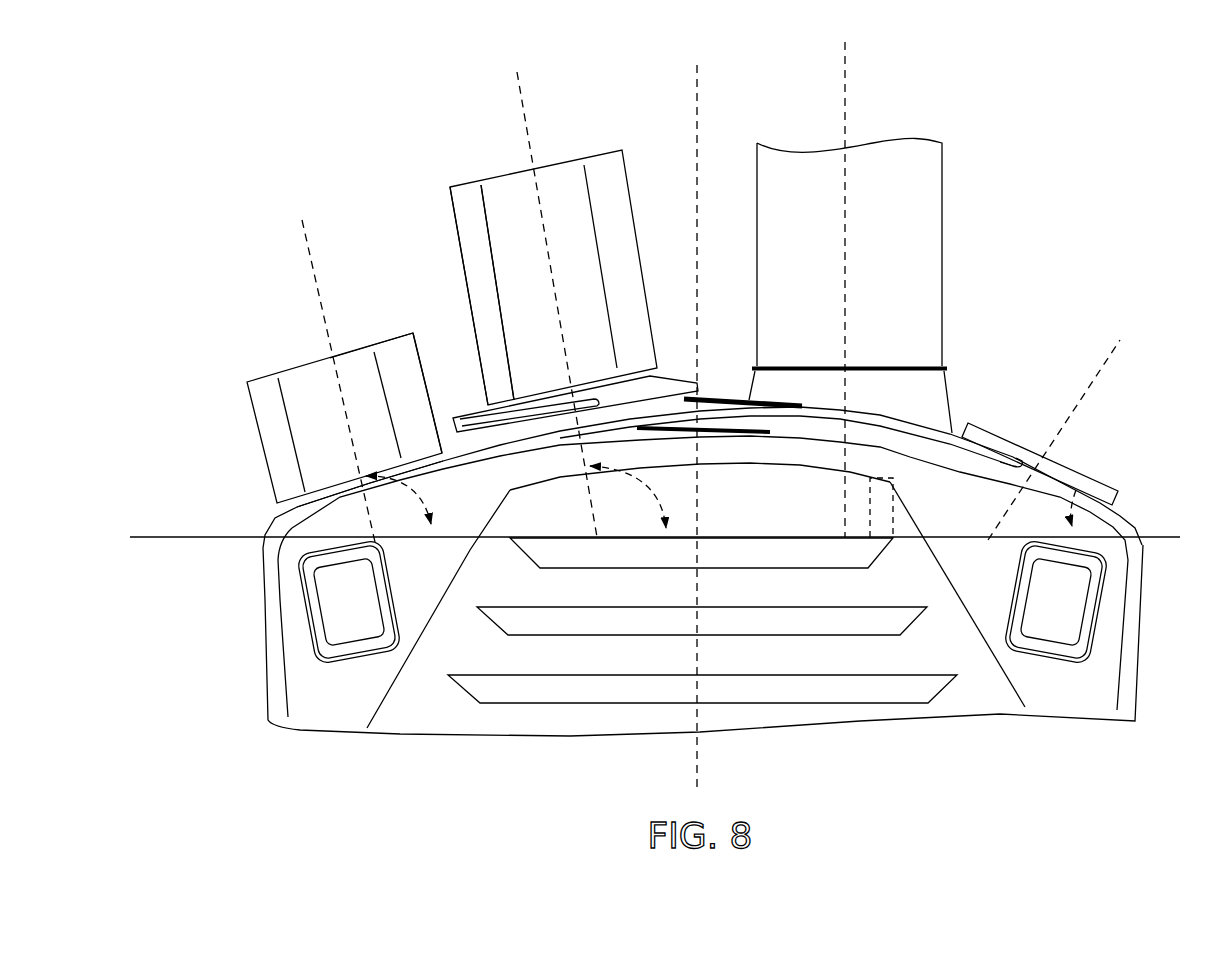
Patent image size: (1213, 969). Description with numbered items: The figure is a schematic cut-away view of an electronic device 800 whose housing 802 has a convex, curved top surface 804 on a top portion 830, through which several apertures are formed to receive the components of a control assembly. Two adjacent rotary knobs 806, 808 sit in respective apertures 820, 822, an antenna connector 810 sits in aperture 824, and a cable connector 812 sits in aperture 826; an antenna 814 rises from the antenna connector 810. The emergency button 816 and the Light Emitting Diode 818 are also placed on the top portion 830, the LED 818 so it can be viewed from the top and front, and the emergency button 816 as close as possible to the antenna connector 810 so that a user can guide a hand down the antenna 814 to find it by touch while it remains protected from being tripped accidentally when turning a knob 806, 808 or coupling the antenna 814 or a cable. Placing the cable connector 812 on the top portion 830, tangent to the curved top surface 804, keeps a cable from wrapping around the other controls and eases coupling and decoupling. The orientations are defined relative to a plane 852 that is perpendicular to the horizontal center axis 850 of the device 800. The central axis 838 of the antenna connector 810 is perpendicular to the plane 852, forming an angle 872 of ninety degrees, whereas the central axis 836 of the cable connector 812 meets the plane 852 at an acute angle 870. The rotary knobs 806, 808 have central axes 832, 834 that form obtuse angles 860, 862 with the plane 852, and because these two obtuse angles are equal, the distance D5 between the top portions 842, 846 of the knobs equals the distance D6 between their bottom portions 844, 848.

The electronic device 800 is at (226, 173).
The housing 802 is at (256, 593).
The curved top surface 804 is at (808, 456).
The rotary knob 806 is at (244, 390).
The rotary knob 808 is at (448, 205).
The antenna connector 810 is at (966, 351).
The cable connector 812 is at (1091, 456).
The antenna 814 is at (918, 142).
The emergency button 816 is at (757, 417).
The Light Emitting Diode 818 is at (573, 417).
The aperture 820 is at (443, 474).
The aperture 822 is at (698, 382).
The aperture 824 is at (938, 425).
The aperture 826 is at (975, 466).
The top portion 830 is at (205, 650).
The central axis 832 is at (314, 257).
The central axis 834 is at (533, 133).
The central axis 836 is at (1124, 349).
The central axis 838 is at (842, 75).
The top portion 842 is at (388, 331).
The bottom portion 844 is at (417, 409).
The top portion 846 is at (468, 301).
The bottom portion 848 is at (505, 361).
The horizontal center axis 850 is at (694, 85).
The plane 852 is at (171, 533).
The obtuse angle 860 is at (424, 510).
The obtuse angle 862 is at (655, 505).
The acute angle 870 is at (1078, 491).
The angle 872 is at (893, 494).
The distance D5 is at (472, 334).
The distance D6 is at (482, 393).